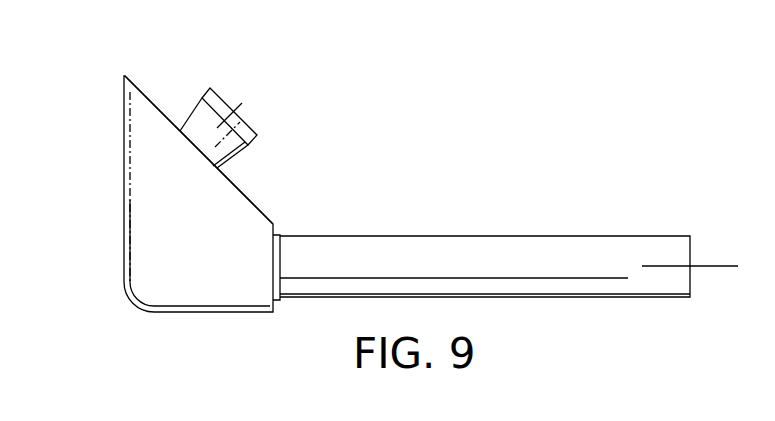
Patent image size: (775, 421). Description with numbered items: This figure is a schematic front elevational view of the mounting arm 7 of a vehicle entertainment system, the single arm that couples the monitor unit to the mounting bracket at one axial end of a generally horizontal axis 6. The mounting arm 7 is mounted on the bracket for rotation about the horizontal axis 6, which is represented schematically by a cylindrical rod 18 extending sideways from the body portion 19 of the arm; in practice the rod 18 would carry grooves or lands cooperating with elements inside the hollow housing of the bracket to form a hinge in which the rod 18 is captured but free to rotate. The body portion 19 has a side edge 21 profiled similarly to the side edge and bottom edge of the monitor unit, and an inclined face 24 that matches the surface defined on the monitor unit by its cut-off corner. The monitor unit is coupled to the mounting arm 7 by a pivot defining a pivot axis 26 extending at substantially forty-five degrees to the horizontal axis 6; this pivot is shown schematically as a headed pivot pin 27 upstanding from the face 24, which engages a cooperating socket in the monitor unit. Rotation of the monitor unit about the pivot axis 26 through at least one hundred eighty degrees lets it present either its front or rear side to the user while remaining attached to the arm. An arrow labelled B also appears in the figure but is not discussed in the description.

The mounting arm 7 is at (110, 71).
The side edge 21 is at (124, 157).
The body portion 19 is at (146, 237).
The face 24 is at (257, 207).
The pivot axis 26 is at (243, 103).
The headed pivot pin 27 is at (209, 88).
The view direction arrow B is at (267, 100).
The cylindrical rod 18 is at (570, 250).
The horizontal axis 6 is at (717, 266).